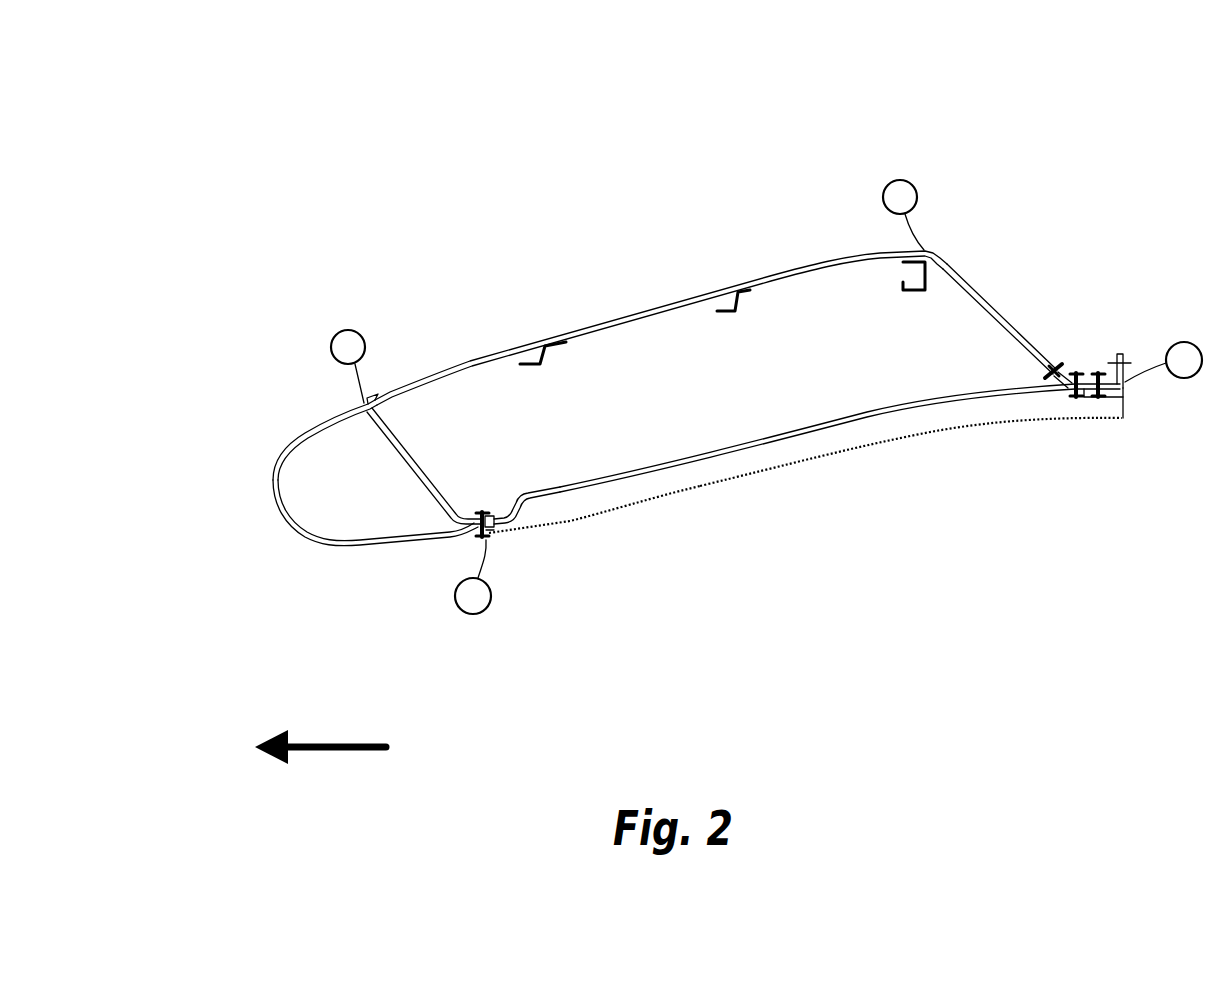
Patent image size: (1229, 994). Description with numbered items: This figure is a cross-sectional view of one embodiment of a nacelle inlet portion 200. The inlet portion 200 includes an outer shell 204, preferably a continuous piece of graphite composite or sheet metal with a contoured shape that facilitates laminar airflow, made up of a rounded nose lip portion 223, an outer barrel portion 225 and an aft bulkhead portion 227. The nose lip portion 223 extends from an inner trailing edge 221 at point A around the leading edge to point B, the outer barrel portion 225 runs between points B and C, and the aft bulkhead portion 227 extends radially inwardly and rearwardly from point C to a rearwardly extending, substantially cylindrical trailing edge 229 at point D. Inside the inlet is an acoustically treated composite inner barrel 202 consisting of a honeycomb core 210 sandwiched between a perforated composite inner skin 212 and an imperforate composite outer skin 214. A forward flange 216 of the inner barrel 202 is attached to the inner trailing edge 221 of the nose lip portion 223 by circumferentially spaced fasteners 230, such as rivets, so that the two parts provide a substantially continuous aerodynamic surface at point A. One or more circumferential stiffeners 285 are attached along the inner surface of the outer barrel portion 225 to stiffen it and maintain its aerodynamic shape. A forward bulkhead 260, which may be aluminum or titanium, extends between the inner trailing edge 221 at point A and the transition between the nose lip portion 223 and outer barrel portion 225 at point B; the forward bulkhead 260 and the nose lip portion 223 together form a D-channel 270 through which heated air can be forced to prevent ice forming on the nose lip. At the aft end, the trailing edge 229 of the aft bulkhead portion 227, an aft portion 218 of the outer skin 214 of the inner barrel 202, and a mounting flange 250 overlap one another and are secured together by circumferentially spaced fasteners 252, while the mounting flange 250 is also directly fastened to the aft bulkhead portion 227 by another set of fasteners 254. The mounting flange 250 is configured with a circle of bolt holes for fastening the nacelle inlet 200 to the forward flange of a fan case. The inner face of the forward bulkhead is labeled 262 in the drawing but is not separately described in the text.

The nacelle inlet portion 200 is at (332, 192).
The inner barrel 202 is at (690, 508).
The outer shell 204 is at (347, 400).
The honeycomb core 210 is at (823, 437).
The perforated composite inner skin 212 is at (747, 470).
The imperforate composite outer skin 214 is at (868, 408).
The forward flange 216 is at (497, 548).
The aft portion 218 is at (1084, 397).
The inner trailing edge 221 is at (467, 533).
The rounded nose lip portion 223 is at (280, 504).
The outer barrel portion 225 is at (497, 347).
The aft bulkhead portion 227 is at (988, 275).
The trailing edge 229 is at (1125, 398).
The fasteners 230 is at (473, 512).
The mounting flange 250 is at (1123, 353).
The fasteners 252 is at (1073, 373).
The fasteners 254 is at (1033, 377).
The forward bulkhead 260 is at (409, 473).
The bulkhead wall inner face 262 is at (407, 477).
The D-channel 270 is at (329, 467).
The circumferential stiffeners 285 is at (727, 313).